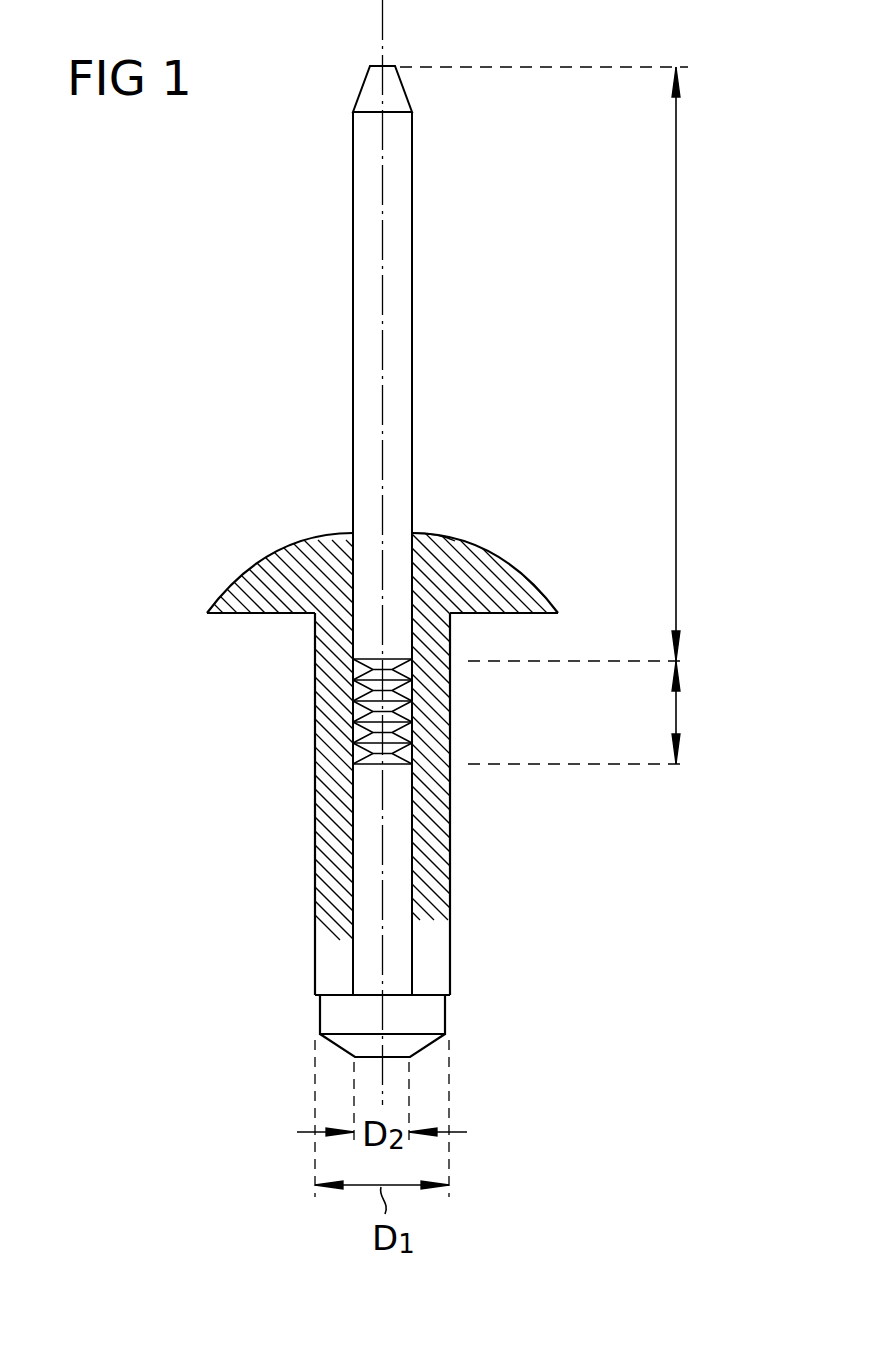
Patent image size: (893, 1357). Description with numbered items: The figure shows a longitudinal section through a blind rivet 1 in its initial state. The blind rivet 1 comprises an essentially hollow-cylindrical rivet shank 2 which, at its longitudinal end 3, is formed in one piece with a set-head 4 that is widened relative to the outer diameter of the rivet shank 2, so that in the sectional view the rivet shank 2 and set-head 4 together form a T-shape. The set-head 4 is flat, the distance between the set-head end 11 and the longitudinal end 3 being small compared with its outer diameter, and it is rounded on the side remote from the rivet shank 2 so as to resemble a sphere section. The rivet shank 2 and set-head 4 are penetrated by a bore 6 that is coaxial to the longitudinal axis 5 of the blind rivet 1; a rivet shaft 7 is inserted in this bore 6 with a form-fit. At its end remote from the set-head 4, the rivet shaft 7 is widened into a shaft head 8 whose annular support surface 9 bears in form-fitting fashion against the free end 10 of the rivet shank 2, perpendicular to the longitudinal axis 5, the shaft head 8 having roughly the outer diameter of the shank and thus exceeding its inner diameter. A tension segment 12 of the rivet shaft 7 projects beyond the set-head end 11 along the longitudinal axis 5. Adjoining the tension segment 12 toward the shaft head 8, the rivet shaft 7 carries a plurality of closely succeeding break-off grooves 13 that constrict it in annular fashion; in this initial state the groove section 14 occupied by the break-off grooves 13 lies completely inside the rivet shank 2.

The blind rivet 1 is at (308, 278).
The rivet shank 2 is at (440, 856).
The longitudinal end 3 is at (470, 617).
The set-head 4 is at (483, 570).
The longitudinal axis 5 is at (382, 24).
The bore 6 is at (350, 858).
The rivet shaft 7 is at (353, 368).
The shaft head 8 is at (427, 1018).
The annular support surface 9 is at (433, 972).
The free end 10 is at (316, 1002).
The set-head end 11 is at (413, 535).
The tension segment 12 is at (678, 370).
The break-off grooves 13 is at (356, 756).
The groove section 14 is at (678, 715).